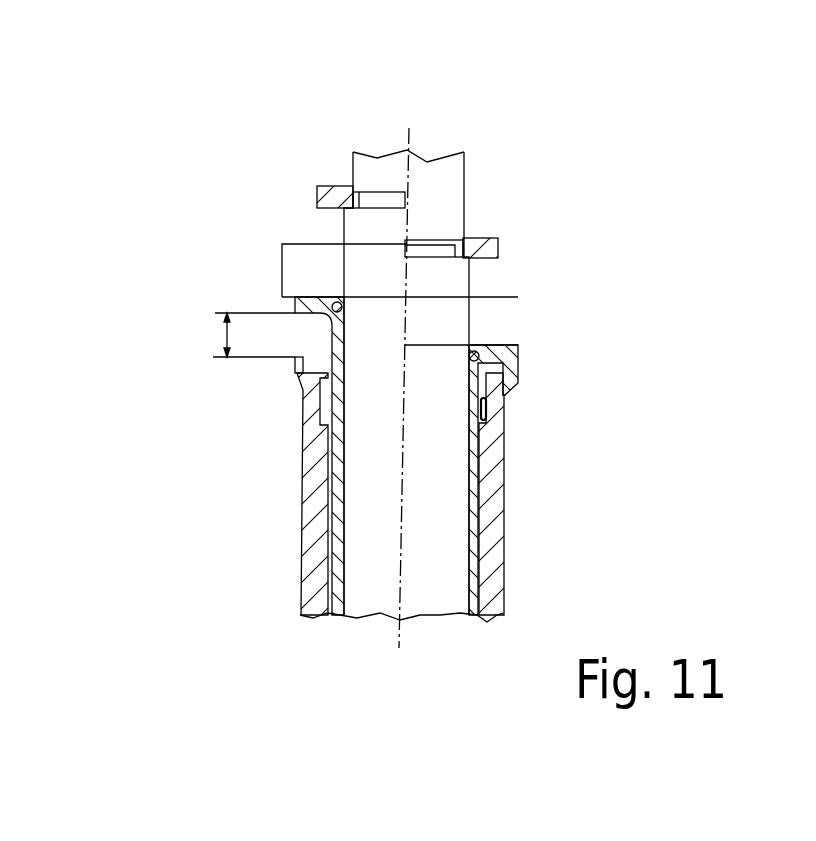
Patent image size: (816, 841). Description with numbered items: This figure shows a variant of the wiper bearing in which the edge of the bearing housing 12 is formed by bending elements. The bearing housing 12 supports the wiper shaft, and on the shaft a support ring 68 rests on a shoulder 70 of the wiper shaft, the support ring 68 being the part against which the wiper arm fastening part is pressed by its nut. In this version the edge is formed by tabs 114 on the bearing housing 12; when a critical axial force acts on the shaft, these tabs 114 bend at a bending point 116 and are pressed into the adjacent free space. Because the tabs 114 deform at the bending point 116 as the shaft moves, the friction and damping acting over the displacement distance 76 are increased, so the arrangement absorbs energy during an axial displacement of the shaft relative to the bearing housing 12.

The bearing housing 12 is at (487, 518).
The support ring 68 is at (323, 186).
The shoulder 70 is at (388, 200).
The displacement distance 76 is at (225, 337).
The tabs 114 is at (297, 375).
The bending point 116 is at (306, 388).